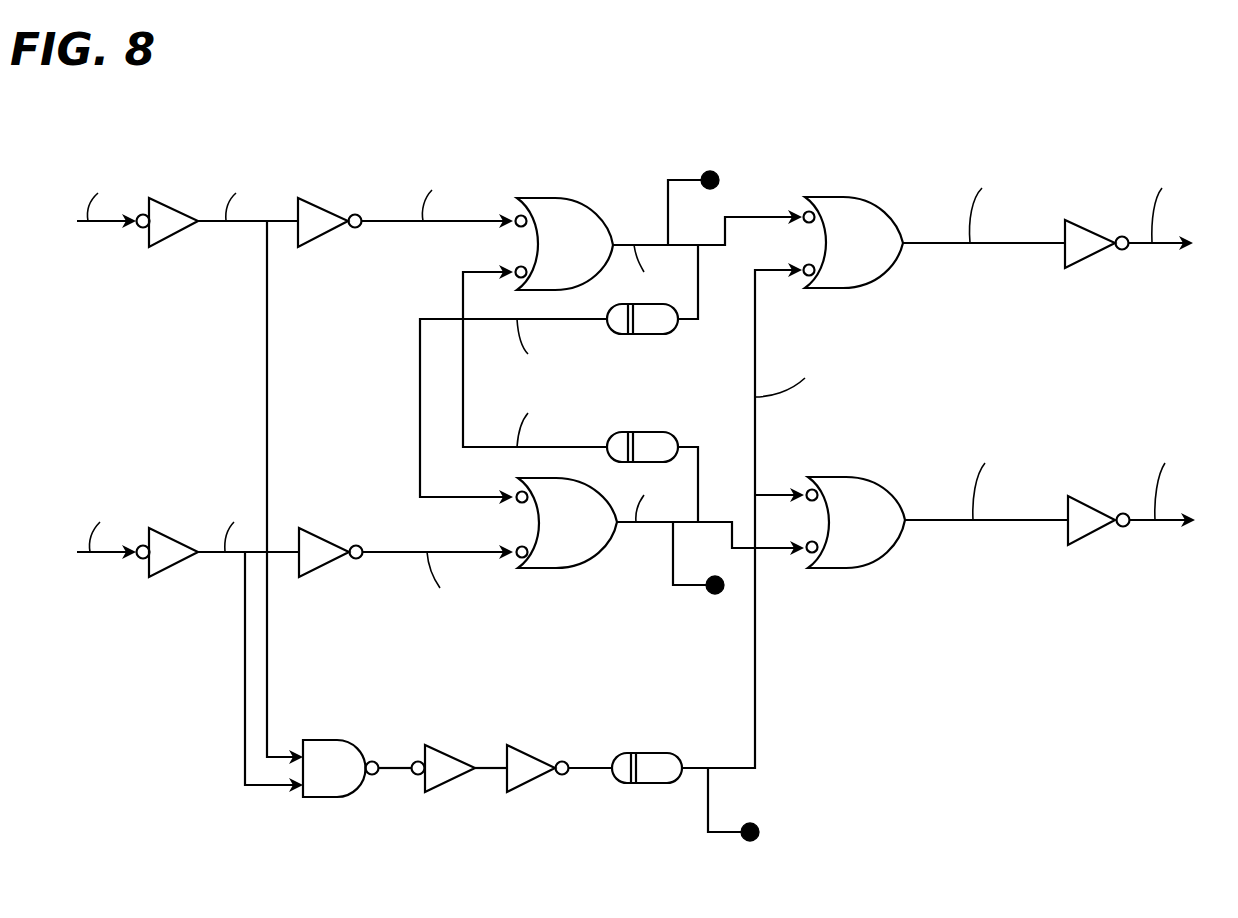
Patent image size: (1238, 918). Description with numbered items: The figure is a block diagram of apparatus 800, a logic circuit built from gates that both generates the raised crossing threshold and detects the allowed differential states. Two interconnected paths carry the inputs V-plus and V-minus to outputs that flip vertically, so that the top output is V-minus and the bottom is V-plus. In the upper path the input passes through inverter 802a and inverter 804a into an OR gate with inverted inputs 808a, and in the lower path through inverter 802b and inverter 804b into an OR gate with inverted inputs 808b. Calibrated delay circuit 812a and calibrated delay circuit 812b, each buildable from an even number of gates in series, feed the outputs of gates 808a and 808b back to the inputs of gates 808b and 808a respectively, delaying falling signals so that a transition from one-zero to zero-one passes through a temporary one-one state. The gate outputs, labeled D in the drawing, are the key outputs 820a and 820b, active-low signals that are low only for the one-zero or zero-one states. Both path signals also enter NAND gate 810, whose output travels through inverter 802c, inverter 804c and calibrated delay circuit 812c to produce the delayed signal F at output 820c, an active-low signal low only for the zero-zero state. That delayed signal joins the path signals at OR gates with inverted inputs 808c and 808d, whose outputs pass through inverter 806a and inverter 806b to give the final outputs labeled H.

The apparatus 800 is at (425, 108).
The inverter 802a is at (182, 234).
The inverter 802b is at (182, 565).
The inverter 802c is at (432, 745).
The inverter 804a is at (330, 234).
The inverter 804b is at (332, 565).
The inverter 804c is at (532, 750).
The inverter 806a is at (1082, 222).
The inverter 806b is at (1082, 540).
The OR gate with inverted inputs 808a is at (535, 198).
The OR gate with inverted inputs 808b is at (540, 568).
The OR gate with inverted inputs 808c is at (818, 197).
The OR gate with inverted inputs 808d is at (822, 568).
The NAND gate 810 is at (325, 797).
The calibrated delay circuit 812a is at (622, 334).
The calibrated delay circuit 812b is at (622, 432).
The calibrated delay circuit 812c is at (623, 753).
The output 820a is at (705, 172).
The output 820b is at (712, 594).
The output 820c is at (748, 841).